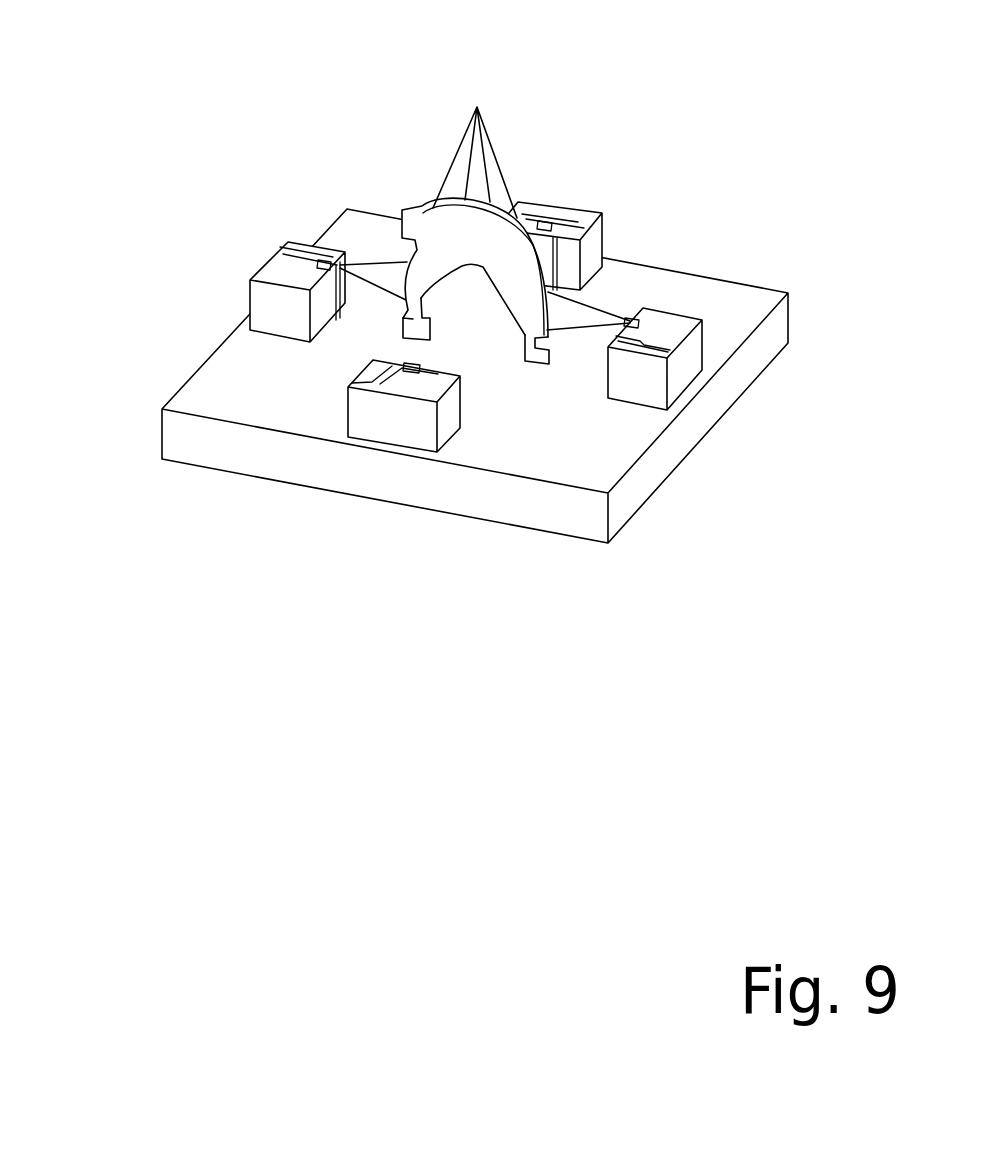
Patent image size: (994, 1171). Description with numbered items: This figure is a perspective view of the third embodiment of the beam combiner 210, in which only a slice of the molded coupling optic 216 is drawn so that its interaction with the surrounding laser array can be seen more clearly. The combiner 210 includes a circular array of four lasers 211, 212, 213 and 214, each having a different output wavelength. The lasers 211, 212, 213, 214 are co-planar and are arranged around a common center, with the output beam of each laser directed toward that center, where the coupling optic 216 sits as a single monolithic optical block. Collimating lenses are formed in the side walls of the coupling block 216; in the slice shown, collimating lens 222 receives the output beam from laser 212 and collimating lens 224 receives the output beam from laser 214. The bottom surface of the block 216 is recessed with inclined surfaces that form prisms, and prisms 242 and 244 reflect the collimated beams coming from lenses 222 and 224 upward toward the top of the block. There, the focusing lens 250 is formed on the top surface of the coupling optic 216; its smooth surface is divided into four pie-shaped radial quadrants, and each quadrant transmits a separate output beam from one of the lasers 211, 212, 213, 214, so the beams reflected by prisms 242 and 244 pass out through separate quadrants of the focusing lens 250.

The combiner 210 is at (678, 93).
The laser 211 is at (418, 372).
The laser 212 is at (632, 320).
The laser 213 is at (541, 226).
The laser 214 is at (326, 262).
The coupling optic 216 is at (520, 252).
The collimating lens 222 is at (543, 312).
The collimating lens 224 is at (405, 280).
The prism 242 is at (512, 318).
The prism 244 is at (188, 572).
The focusing lens 250 is at (503, 192).